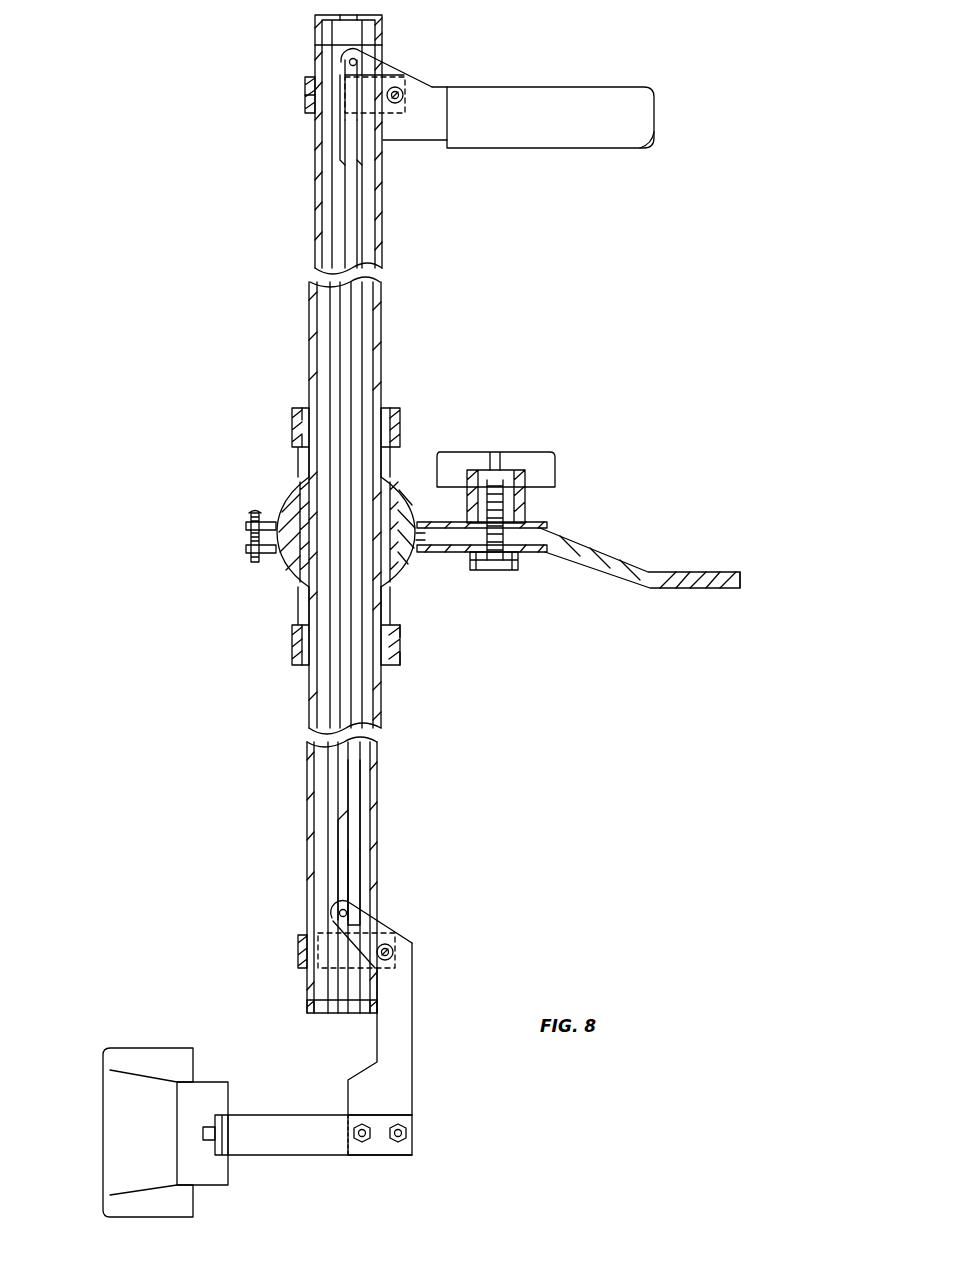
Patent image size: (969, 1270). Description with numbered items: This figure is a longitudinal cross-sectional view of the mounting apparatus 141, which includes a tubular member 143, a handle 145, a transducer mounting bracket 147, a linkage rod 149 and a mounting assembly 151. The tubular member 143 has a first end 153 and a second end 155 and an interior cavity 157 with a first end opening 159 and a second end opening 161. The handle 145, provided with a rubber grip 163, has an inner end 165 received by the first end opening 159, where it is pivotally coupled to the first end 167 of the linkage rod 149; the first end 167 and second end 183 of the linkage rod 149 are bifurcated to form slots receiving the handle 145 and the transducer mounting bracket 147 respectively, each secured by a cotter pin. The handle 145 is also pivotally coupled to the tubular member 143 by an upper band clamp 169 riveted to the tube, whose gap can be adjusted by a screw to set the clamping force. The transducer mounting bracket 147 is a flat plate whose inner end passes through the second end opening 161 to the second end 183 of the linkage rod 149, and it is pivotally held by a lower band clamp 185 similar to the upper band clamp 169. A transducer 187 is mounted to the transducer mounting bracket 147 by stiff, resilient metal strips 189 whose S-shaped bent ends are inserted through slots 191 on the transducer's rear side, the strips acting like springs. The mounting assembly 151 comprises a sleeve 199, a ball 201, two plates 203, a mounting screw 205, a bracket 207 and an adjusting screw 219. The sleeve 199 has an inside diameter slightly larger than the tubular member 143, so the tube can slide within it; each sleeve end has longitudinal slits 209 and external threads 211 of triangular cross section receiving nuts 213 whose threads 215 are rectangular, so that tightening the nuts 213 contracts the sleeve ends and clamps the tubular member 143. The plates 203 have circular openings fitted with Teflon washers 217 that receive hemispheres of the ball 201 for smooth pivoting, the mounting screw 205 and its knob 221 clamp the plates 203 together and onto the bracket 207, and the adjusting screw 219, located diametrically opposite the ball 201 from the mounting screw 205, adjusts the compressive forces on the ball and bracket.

The mounting apparatus 141 is at (258, 205).
The tubular member 143 is at (312, 138).
The handle 145 is at (585, 68).
The transducer mounting bracket 147 is at (475, 996).
The linkage rod 149 is at (338, 800).
The mounting assembly 151 is at (258, 599).
The first end 153 is at (316, 28).
The second end 155 is at (308, 1008).
The interior cavity 157 is at (318, 874).
The first end opening 159 is at (386, 62).
The second end opening 161 is at (378, 882).
The rubber grip 163 is at (612, 150).
The inner end of the handle 165 is at (342, 62).
The first end of the linkage rod 167 is at (310, 86).
The upper band clamp 169 is at (306, 100).
The second end of the linkage rod 183 is at (334, 932).
The lower band clamp 185 is at (300, 950).
The transducer 187 is at (128, 1048).
The strips 189 is at (308, 1155).
The slots 191 is at (210, 1128).
The sleeve 199 is at (392, 582).
The ball 201 is at (285, 500).
The plates 203 is at (432, 522).
The mounting screw 205 is at (534, 522).
The bracket 207 is at (660, 578).
The slits 209 is at (292, 440).
The external threads 211 is at (386, 410).
The nuts 213 is at (399, 412).
The threads 215 is at (400, 432).
The Teflon washer 217 is at (410, 514).
The adjusting screw 219 is at (248, 540).
The knob 221 is at (548, 462).